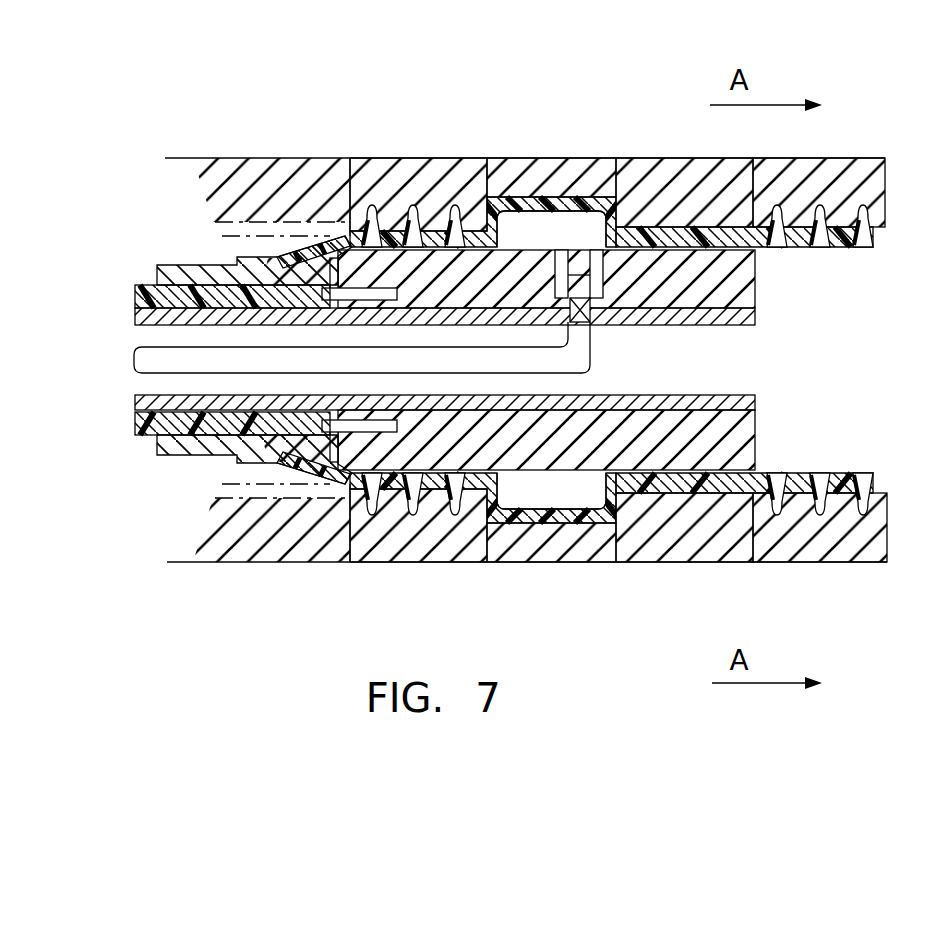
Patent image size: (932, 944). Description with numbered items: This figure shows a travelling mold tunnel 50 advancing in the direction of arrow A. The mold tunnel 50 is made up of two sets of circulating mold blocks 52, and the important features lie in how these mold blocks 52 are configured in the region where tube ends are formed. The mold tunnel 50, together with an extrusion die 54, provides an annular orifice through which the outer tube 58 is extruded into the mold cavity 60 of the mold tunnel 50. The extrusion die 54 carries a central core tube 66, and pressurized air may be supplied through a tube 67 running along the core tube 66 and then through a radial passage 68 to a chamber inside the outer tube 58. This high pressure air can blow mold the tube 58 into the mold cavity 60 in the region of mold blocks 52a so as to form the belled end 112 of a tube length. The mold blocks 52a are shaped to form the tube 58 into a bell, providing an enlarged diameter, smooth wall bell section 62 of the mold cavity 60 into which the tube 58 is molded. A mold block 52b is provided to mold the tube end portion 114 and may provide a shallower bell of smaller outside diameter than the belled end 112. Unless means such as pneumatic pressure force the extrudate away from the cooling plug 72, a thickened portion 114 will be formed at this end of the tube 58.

The travelling mold tunnel 50 is at (386, 128).
The mold blocks 52 is at (835, 533).
The mold blocks 52a is at (603, 552).
The mold block 52b is at (642, 530).
The extrusion die 54 is at (163, 265).
The outer tube 58 is at (572, 523).
The mold cavity 60 is at (830, 308).
The bell section 62 is at (715, 250).
The central core tube 66 is at (140, 418).
The tube 67 is at (327, 358).
The radial passage 68 is at (590, 340).
The cooling plug 72 is at (748, 447).
The belled end 112 is at (540, 525).
The tube end portion 114 is at (733, 520).